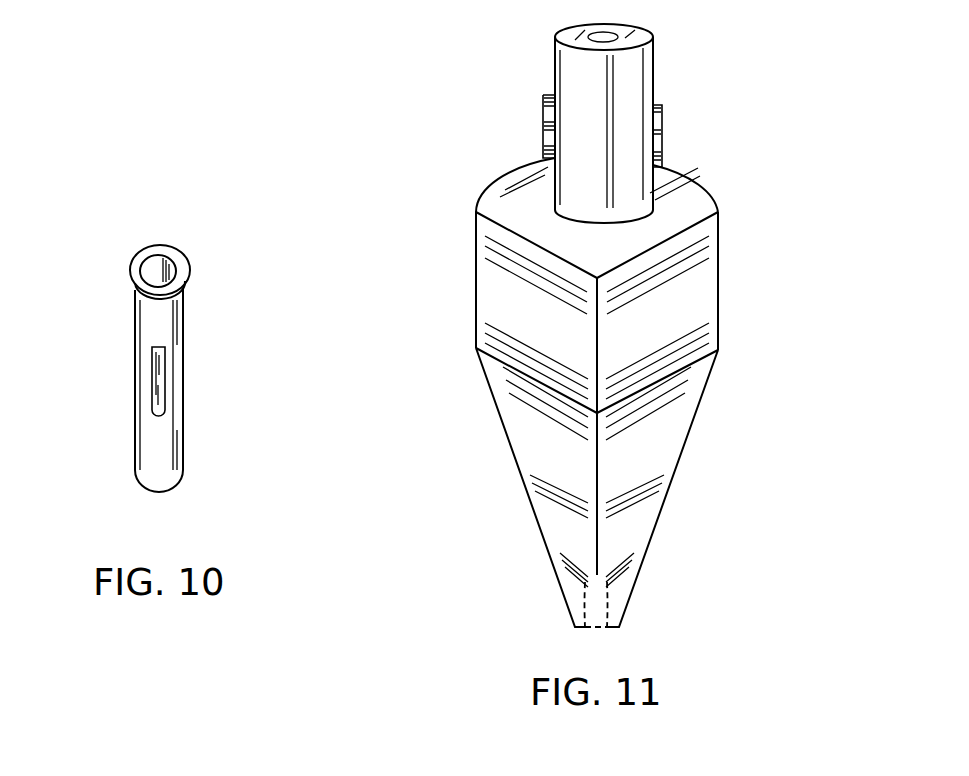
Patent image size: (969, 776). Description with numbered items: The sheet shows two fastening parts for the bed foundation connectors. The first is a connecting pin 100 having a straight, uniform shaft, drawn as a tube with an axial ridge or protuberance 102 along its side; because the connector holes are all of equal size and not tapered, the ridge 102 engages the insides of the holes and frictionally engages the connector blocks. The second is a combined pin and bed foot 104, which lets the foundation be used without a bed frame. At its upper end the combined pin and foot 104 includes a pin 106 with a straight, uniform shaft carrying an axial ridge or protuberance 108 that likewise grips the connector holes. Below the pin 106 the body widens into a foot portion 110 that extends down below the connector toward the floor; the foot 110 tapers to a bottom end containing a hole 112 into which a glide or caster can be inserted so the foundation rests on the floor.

In FIG. 10, the pin 100 is at (152, 465).
In FIG. 10, the axial ridge or protuberance 102 is at (163, 415).
In FIG. 11, the combined pin and bed foot 104 is at (421, 197).
In FIG. 11, the pin 106 is at (567, 65).
In FIG. 11, the axial ridge or protuberance 108 is at (542, 141).
In FIG. 11, the foot portion 110 is at (518, 421).
In FIG. 11, the hole 112 is at (585, 605).